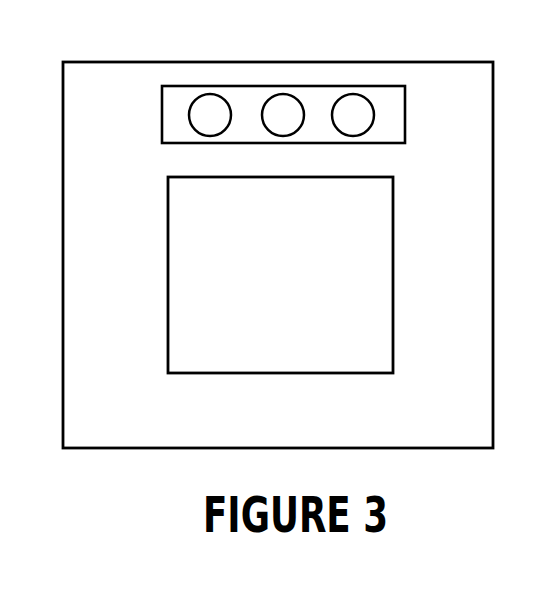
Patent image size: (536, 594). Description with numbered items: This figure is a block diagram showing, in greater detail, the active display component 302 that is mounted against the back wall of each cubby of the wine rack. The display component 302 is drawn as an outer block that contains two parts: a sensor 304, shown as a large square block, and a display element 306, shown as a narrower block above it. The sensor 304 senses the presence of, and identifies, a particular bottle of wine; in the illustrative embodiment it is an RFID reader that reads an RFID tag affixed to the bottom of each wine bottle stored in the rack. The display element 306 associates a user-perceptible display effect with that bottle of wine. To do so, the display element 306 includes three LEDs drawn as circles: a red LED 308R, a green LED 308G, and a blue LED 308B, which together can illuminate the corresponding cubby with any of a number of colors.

The display component 302 is at (63, 255).
The sensor 304 is at (393, 275).
The display element 306 is at (405, 113).
The red LED 308R is at (210, 93).
The green LED 308G is at (283, 93).
The blue LED 308B is at (353, 94).